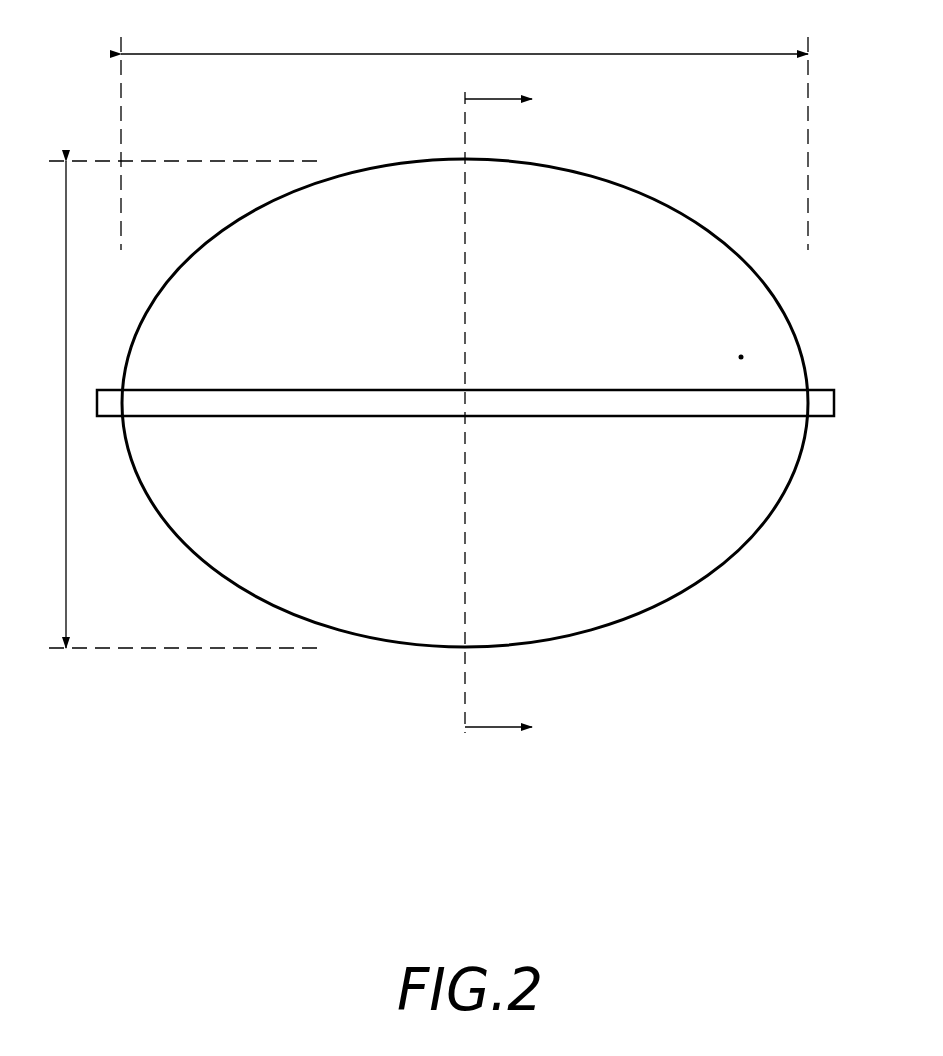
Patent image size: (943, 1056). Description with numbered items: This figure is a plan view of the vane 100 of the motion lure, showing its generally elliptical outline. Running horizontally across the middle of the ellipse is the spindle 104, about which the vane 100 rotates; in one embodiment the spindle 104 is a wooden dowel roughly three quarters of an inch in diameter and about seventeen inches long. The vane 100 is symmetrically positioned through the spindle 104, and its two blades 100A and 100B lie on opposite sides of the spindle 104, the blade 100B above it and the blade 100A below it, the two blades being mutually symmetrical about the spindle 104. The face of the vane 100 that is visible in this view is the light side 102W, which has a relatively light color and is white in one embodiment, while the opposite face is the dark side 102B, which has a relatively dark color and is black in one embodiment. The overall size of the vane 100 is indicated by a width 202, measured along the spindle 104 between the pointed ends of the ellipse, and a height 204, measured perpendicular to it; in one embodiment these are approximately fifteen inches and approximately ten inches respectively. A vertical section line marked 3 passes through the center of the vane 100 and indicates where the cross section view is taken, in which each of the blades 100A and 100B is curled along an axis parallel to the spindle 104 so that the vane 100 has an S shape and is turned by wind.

The vane 100 is at (465, 427).
The blade 100A is at (432, 622).
The blade 100B is at (588, 205).
The light side 102W is at (741, 357).
The dark side 102B is at (804, 487).
The spindle 104 is at (820, 407).
The width 202 is at (513, 54).
The height 204 is at (66, 355).
The section line 3 is at (514, 414).